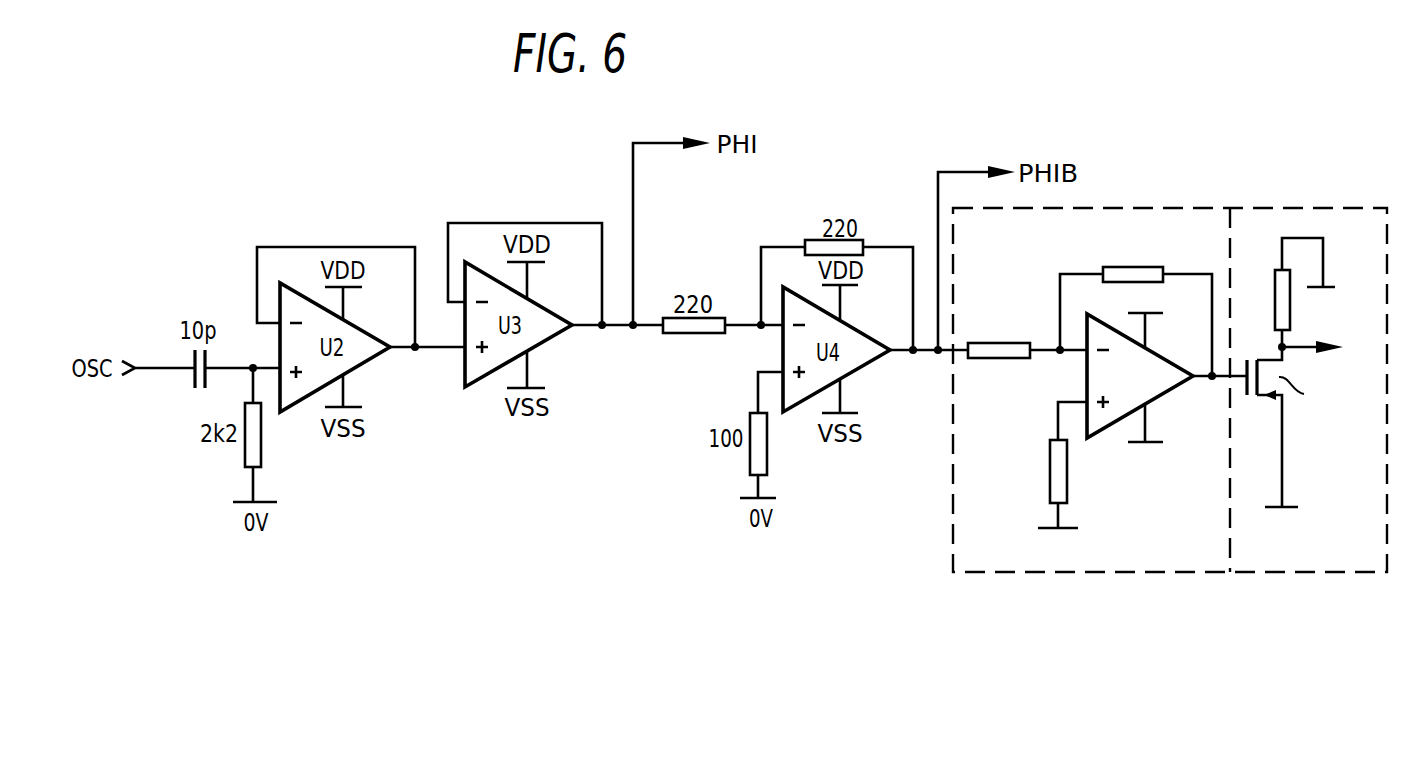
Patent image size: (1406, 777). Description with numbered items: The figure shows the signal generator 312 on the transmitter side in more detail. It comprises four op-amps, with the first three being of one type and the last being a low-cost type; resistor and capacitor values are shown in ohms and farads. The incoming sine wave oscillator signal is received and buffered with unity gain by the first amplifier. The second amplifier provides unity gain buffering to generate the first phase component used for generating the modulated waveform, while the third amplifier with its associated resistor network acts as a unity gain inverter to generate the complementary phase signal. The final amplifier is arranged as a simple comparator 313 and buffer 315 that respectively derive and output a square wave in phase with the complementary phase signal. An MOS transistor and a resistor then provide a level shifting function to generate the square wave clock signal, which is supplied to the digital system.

The signal generator 312 is at (1192, 142).
The comparator 313 is at (1117, 572).
The buffer 315 is at (1300, 572).